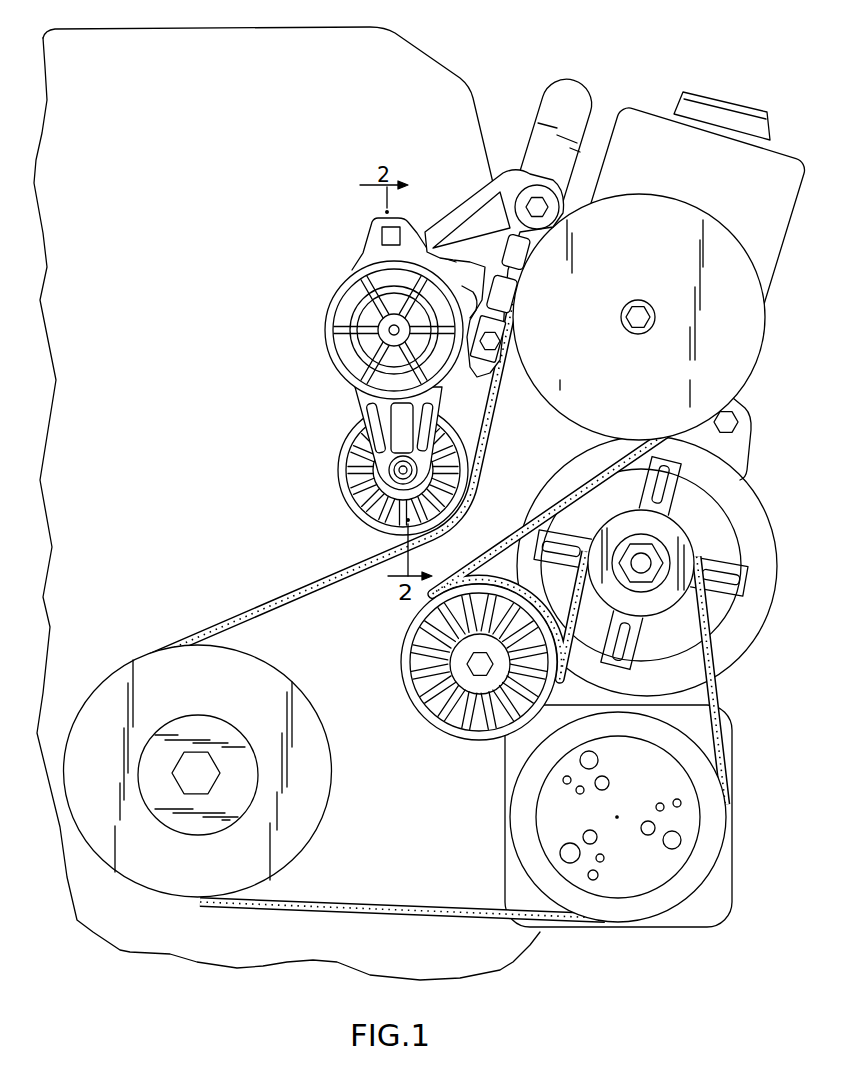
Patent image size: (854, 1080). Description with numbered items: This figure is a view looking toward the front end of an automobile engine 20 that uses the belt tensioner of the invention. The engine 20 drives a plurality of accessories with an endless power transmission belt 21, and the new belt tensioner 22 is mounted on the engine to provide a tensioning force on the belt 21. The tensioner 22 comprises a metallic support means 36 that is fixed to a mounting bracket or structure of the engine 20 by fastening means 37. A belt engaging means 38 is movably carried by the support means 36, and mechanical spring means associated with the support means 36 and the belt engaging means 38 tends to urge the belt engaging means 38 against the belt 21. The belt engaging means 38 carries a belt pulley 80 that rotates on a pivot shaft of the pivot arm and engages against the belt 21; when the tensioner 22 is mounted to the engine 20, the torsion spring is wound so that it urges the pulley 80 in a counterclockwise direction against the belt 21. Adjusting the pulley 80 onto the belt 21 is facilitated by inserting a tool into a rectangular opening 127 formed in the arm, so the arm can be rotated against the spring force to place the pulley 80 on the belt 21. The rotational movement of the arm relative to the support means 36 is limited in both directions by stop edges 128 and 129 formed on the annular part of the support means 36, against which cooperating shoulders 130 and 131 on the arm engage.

The automobile engine 20 is at (430, 50).
The endless power transmission belt 21 is at (245, 610).
The belt tensioner 22 is at (337, 384).
The support means 36 is at (470, 202).
The fastening means 37 is at (546, 204).
The belt engaging means 38 is at (350, 414).
The belt pulley 80 is at (340, 490).
The rectangular opening 127 is at (380, 236).
The stop edge 128 is at (506, 323).
The stop edge 129 is at (514, 283).
The shoulder 130 is at (439, 378).
The shoulder 131 is at (434, 261).